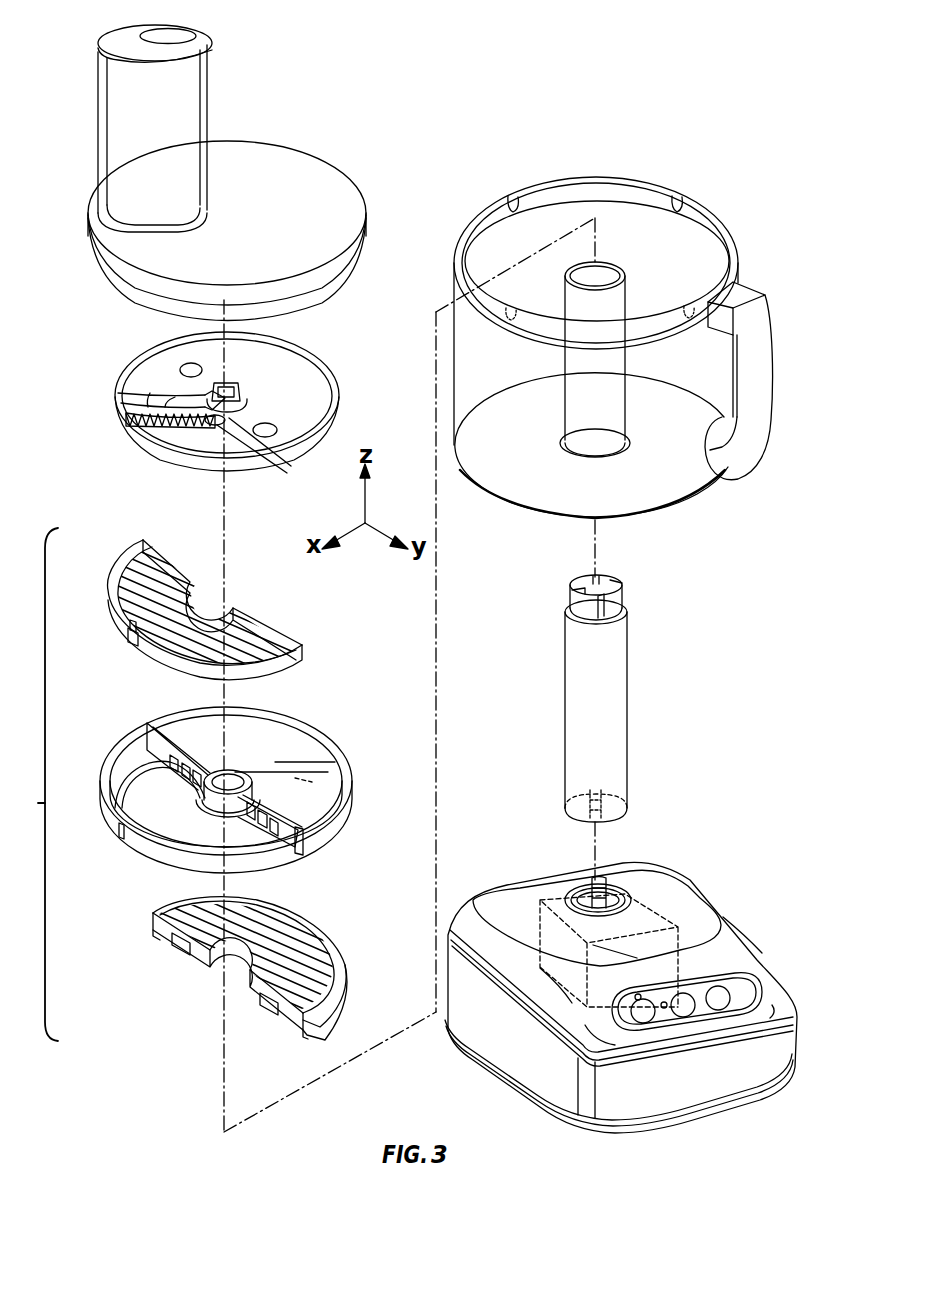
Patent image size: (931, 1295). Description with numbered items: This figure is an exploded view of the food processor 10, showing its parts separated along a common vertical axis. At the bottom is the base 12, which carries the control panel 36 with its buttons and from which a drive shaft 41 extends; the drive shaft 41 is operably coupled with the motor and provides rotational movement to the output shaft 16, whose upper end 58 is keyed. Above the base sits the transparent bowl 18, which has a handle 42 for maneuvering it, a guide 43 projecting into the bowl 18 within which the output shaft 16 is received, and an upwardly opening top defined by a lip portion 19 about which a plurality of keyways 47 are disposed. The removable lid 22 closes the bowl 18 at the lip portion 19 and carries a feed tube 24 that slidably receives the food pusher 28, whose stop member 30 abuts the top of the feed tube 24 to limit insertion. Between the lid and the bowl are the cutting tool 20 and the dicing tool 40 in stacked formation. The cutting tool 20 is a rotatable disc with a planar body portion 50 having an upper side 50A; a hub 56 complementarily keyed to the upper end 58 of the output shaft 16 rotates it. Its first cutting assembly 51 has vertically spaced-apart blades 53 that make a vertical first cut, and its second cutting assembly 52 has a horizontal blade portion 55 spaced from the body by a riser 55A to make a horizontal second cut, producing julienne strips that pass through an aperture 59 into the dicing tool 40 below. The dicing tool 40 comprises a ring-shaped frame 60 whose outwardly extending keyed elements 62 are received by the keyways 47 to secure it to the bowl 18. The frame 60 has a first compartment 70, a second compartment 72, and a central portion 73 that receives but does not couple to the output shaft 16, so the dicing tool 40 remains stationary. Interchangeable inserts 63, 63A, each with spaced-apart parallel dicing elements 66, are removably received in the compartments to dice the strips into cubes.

The food processor 10 is at (482, 100).
The base 12 is at (622, 979).
The output shaft 16 is at (625, 698).
The bowl 18 is at (632, 342).
The lip portion 19 is at (738, 282).
The cutting tool 20 is at (210, 397).
The lid 22 is at (78, 201).
The feed tube 24 is at (97, 101).
The food pusher 28 is at (198, 95).
The stop member 30 is at (98, 46).
The control panel 36 is at (722, 995).
The dicing tool 40 is at (202, 776).
The drive shaft 41 is at (588, 888).
The handle 42 is at (770, 327).
The guide 43 is at (622, 298).
The keyways 47 is at (536, 196).
The planar body portion 50 is at (288, 368).
The upper side 50A is at (270, 376).
The first cutting assembly 51 is at (150, 436).
The second cutting assembly 52 is at (128, 401).
The vertical blades 53 is at (285, 474).
The horizontal blade portion 55 is at (174, 398).
The riser 55A is at (148, 393).
The hub 56 is at (248, 394).
The upper end 58 is at (622, 598).
The aperture 59 is at (193, 422).
The frame 60 is at (232, 803).
The keyed elements 62 is at (119, 832).
The insert 63 is at (191, 591).
The insert 63A is at (232, 961).
The dicing elements 66 is at (136, 582).
The first compartment 70 is at (160, 804).
The second compartment 72 is at (303, 780).
The central portion 73 is at (238, 772).